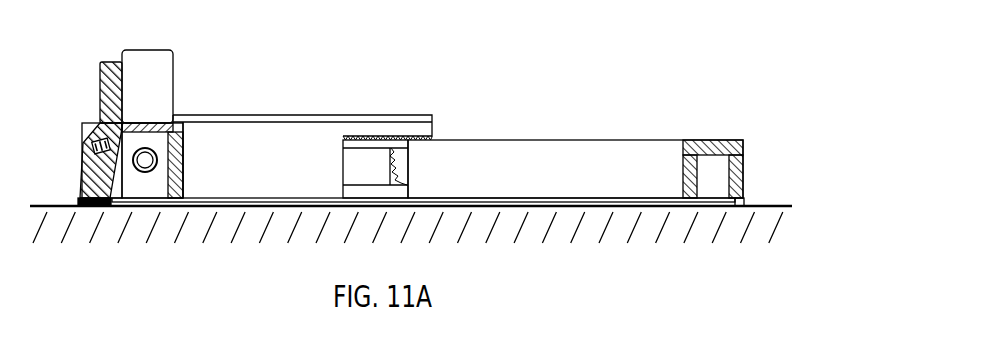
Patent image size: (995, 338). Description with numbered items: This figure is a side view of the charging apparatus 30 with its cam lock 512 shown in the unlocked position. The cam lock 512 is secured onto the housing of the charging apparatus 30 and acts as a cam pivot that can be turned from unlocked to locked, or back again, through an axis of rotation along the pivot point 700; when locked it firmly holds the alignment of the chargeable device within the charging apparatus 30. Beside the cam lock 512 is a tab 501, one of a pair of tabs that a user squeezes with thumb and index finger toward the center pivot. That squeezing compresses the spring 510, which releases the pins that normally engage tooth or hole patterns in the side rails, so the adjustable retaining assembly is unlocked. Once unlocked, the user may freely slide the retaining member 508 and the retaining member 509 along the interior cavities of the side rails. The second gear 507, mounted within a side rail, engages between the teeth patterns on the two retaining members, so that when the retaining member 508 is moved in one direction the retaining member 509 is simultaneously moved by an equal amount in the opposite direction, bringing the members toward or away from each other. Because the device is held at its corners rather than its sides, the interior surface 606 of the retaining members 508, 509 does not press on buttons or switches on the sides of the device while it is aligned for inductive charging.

The charging apparatus 30 is at (411, 146).
The tab 501 is at (148, 50).
The cam lock 512 is at (108, 62).
The spring 510 is at (145, 147).
The retaining member 508 is at (257, 115).
The second gear 507 is at (403, 155).
The retaining member 509 is at (537, 141).
The pivot point 700 is at (88, 141).
The interior surface 606 is at (682, 173).